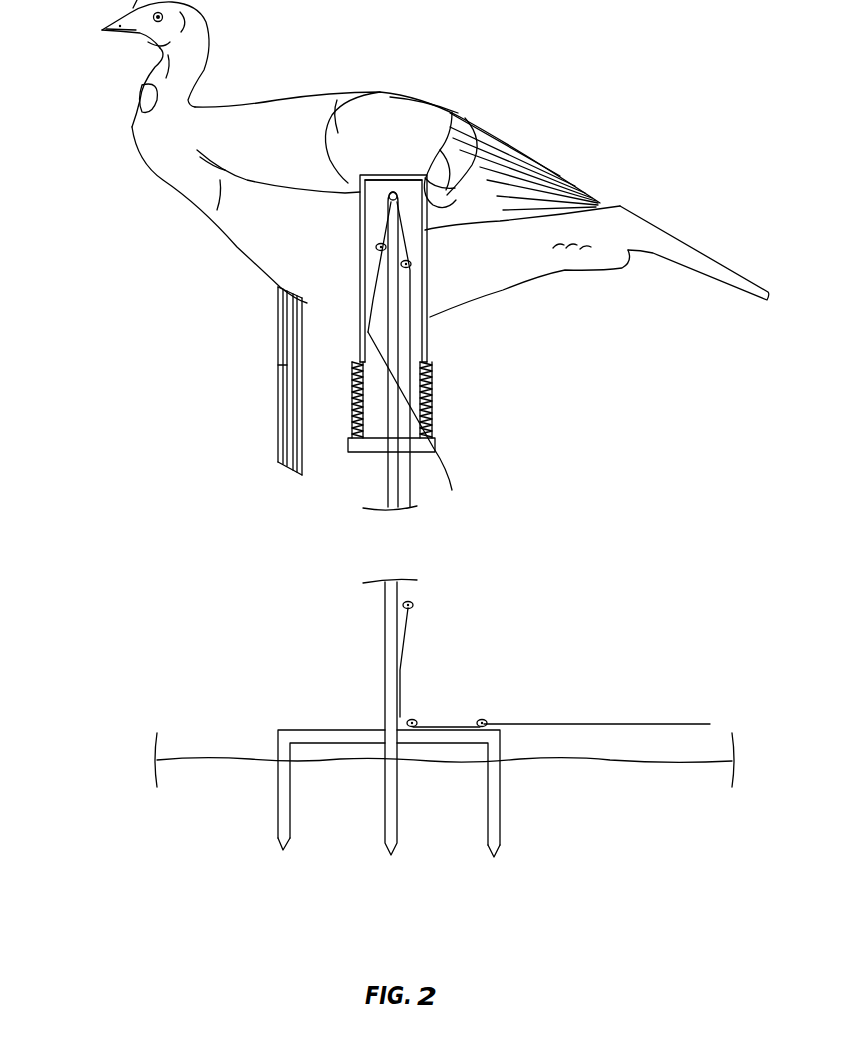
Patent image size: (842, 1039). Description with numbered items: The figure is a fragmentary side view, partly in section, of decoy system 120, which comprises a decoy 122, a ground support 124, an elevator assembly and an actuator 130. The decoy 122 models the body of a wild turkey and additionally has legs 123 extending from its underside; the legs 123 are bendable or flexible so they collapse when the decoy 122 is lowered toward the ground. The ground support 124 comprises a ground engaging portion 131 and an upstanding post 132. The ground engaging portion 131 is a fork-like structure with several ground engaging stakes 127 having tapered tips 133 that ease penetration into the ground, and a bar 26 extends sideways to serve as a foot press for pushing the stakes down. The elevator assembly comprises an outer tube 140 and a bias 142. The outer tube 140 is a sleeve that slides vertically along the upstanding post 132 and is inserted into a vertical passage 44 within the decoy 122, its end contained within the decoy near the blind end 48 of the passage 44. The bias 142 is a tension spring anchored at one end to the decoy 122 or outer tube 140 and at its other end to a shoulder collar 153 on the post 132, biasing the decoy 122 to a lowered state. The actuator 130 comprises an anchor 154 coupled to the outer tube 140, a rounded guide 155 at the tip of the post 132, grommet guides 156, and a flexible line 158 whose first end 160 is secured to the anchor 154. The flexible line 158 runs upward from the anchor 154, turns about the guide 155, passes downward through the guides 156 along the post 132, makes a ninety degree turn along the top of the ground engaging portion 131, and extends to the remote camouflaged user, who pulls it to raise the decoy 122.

The bar 26 is at (420, 742).
The passage 44 is at (445, 205).
The blind end 48 is at (412, 174).
The decoy system 120 is at (409, 427).
The decoy 122 is at (303, 92).
The legs 123 is at (278, 425).
The ground support 124 is at (444, 759).
The ground engaging stakes 127 is at (277, 805).
The actuator 130 is at (414, 300).
The ground engaging portion 131 is at (308, 733).
The upstanding post 132 is at (378, 615).
The tapered tips 133 is at (282, 842).
The outer tube 140 is at (388, 181).
The bias 142 is at (353, 407).
The shoulder collar 153 is at (372, 447).
The anchor 154 is at (419, 426).
The guide 155 is at (358, 185).
The guides 156 is at (399, 191).
The flexible line 158 is at (670, 722).
The first end 160 is at (367, 337).